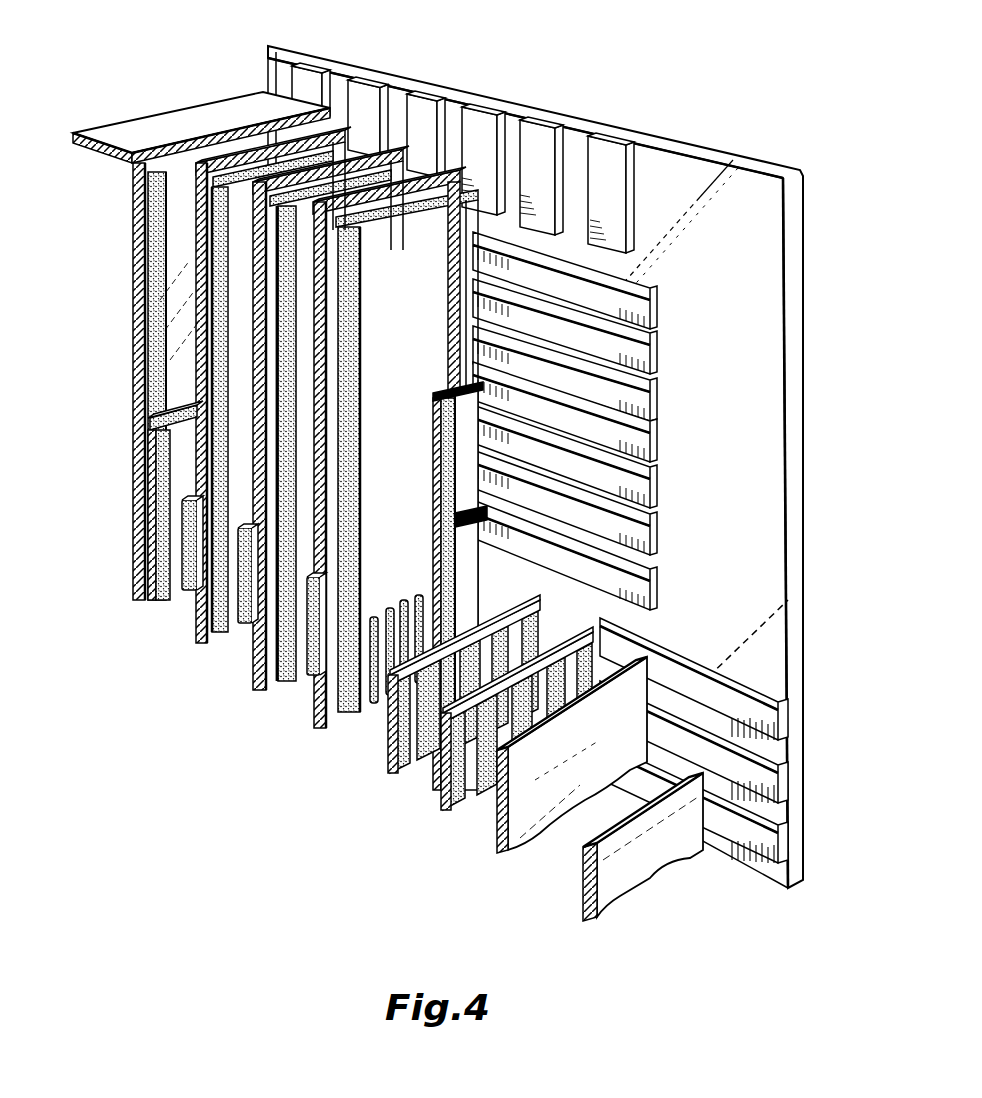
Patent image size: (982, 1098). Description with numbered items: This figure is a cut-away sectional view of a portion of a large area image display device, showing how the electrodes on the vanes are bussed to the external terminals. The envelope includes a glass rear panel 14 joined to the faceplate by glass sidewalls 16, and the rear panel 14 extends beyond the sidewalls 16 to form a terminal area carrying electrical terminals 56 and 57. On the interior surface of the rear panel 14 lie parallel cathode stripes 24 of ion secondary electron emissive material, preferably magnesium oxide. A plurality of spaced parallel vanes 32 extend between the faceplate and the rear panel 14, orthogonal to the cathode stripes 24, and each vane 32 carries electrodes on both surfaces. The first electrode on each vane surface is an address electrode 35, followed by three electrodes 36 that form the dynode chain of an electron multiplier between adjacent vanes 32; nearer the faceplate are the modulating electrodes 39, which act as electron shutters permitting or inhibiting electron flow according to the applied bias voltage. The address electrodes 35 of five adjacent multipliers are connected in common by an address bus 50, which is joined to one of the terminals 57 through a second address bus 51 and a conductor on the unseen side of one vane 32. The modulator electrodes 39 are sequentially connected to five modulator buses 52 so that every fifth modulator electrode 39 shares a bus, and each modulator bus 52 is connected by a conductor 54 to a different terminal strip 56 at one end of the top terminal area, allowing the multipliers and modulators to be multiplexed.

The rear panel 14 is at (792, 437).
The sidewalls 16 is at (190, 118).
The cathode stripes 24 is at (783, 730).
The vanes 32 is at (548, 820).
The address electrode 35 is at (452, 514).
The dynode electrodes 36 is at (419, 595).
The modulating electrodes 39 is at (357, 475).
The address bus 50 is at (656, 601).
The second address bus 51 is at (656, 453).
The modulator buses 52 is at (656, 314).
The conductor 54 is at (430, 208).
The terminal strips 56 is at (365, 83).
The terminal 57 is at (305, 72).